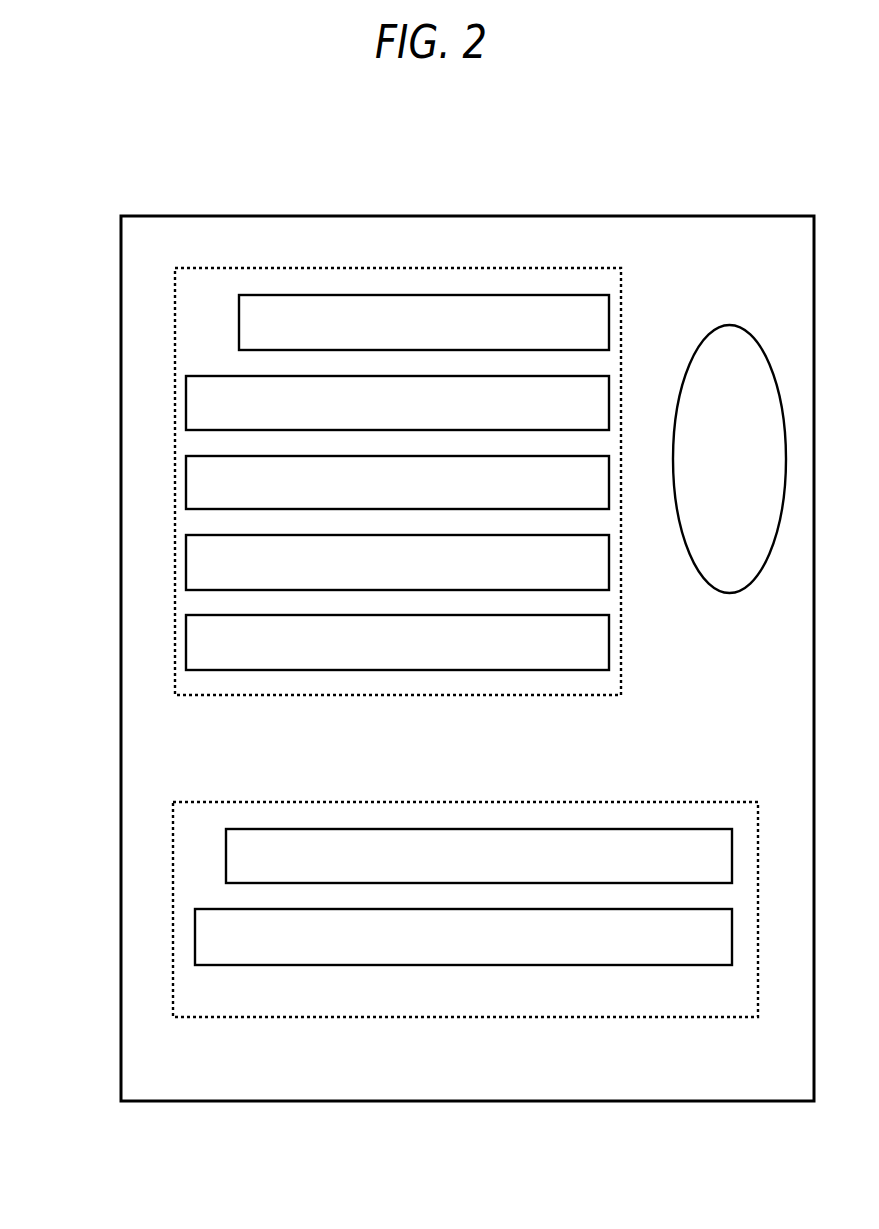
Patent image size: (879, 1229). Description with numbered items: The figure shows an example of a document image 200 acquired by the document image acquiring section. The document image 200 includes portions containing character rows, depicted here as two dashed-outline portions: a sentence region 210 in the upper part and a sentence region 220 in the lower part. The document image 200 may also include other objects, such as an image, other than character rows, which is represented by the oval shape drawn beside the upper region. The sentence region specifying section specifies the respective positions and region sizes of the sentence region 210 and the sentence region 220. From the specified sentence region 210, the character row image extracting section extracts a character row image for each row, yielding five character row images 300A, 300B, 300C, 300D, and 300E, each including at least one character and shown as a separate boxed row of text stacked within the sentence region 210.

The document image 200 is at (468, 216).
The sentence region 210 is at (396, 266).
The sentence region 220 is at (173, 912).
The character row image 300A is at (239, 323).
The character row image 300B is at (186, 404).
The character row image 300C is at (186, 485).
The character row image 300D is at (186, 564).
The character row image 300E is at (186, 644).